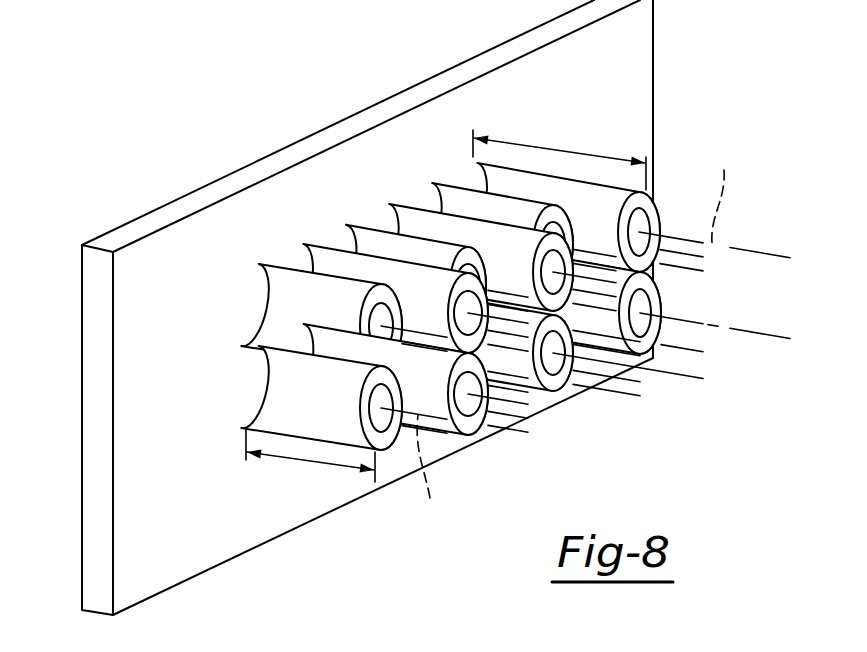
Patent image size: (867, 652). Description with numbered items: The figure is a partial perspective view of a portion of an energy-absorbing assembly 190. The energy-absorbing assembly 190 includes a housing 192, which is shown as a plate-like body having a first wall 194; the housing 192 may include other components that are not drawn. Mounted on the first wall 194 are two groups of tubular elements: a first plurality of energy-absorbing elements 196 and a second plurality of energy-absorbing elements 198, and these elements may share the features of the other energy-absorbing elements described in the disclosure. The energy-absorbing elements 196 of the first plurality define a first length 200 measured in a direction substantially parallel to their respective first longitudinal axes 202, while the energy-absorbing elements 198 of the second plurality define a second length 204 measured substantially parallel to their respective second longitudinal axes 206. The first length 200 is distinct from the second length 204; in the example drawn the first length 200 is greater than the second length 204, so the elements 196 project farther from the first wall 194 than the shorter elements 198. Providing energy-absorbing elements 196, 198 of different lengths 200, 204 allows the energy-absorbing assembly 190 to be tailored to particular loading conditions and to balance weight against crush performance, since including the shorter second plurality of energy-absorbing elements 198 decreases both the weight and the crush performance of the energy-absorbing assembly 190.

The energy-absorbing assembly 190 is at (187, 110).
The housing 192 is at (455, 63).
The first wall 194 is at (635, 40).
The first plurality of energy-absorbing elements 196 is at (653, 307).
The second plurality of energy-absorbing elements 198 is at (357, 243).
The first length 200 is at (575, 153).
The first longitudinal axes 202 is at (722, 192).
The second length 204 is at (288, 460).
The second longitudinal axes 206 is at (423, 472).